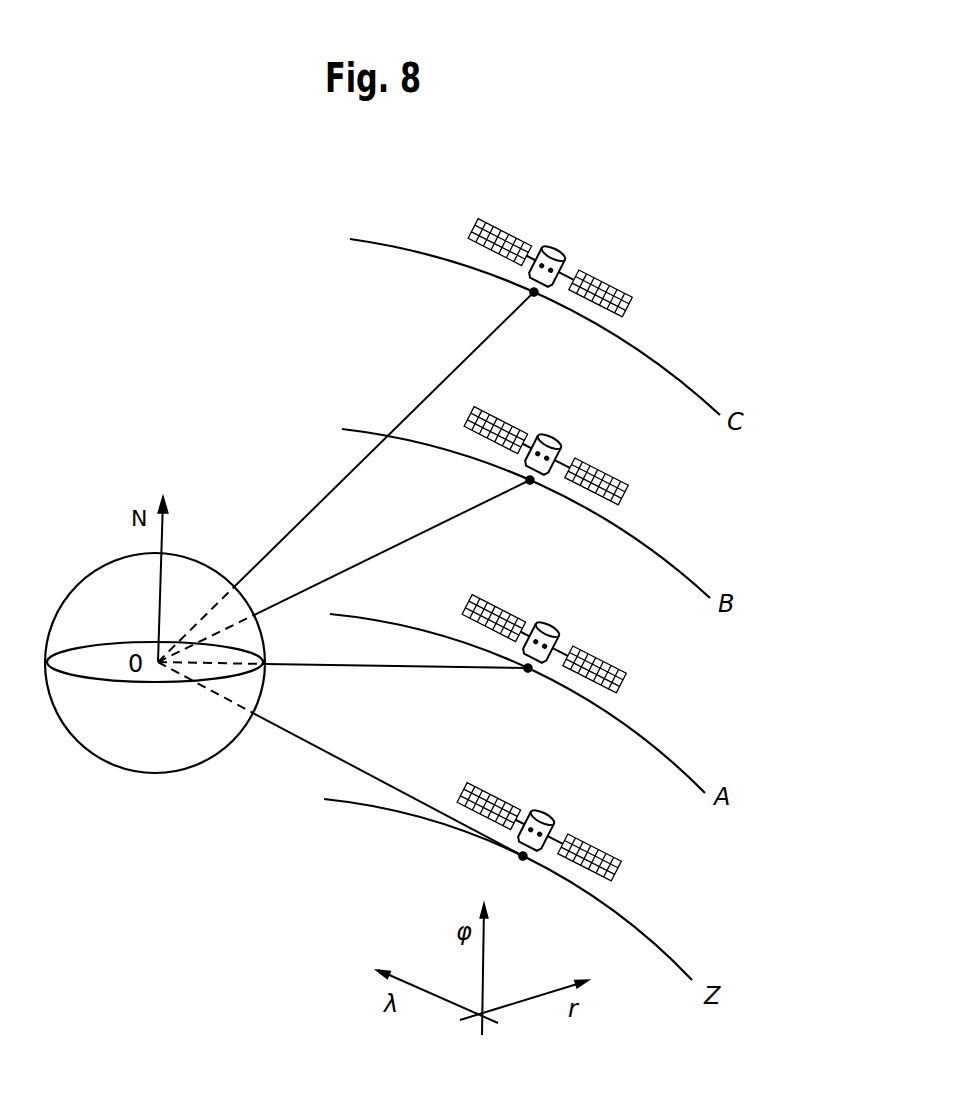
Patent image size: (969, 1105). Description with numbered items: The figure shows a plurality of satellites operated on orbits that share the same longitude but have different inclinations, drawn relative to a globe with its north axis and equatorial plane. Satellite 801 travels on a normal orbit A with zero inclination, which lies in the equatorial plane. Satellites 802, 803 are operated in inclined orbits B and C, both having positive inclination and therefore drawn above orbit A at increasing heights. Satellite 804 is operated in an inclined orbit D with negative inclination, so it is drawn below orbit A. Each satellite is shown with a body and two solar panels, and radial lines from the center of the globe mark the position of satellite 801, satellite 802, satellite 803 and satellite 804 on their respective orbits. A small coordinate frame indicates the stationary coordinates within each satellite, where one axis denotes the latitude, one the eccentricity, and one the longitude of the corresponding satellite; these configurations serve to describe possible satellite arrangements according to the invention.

The satellite 801 is at (563, 620).
The satellite 802 is at (563, 432).
The satellite 803 is at (577, 238).
The satellite 804 is at (565, 813).